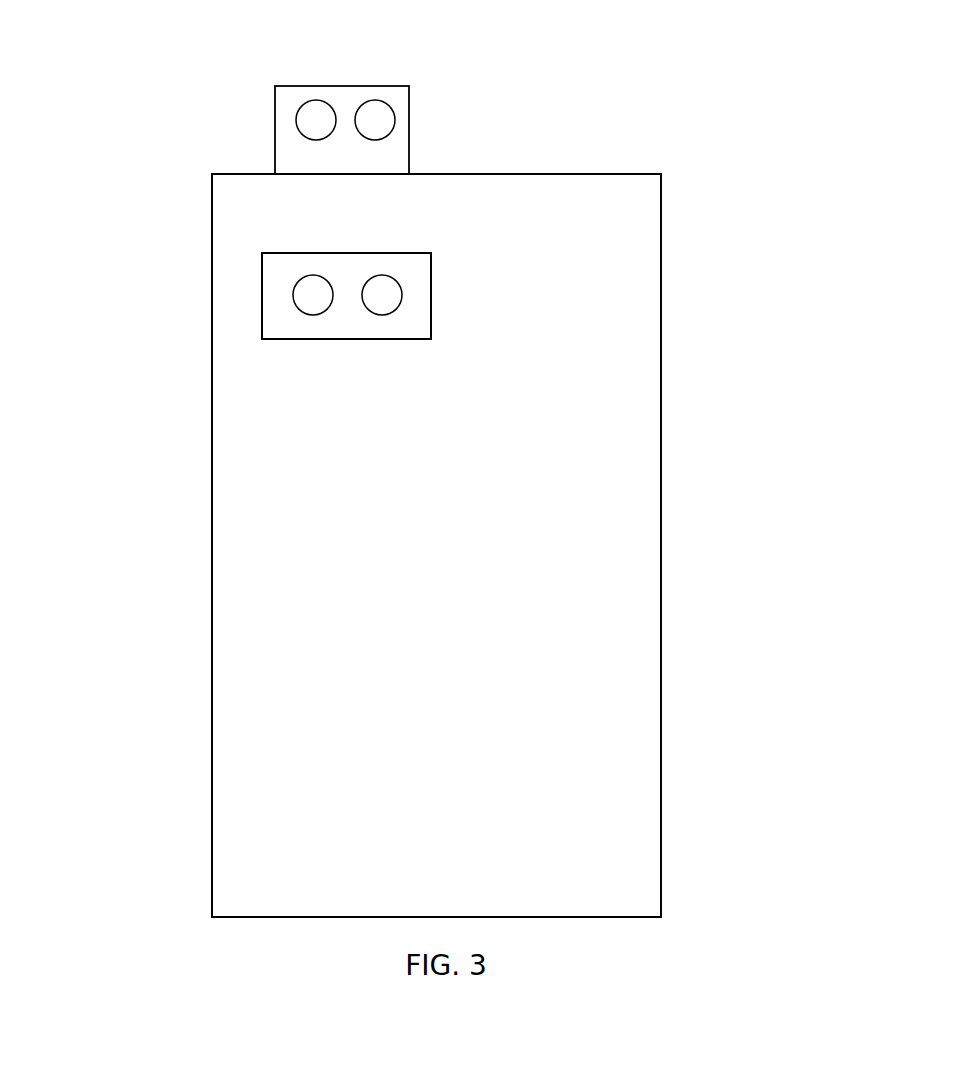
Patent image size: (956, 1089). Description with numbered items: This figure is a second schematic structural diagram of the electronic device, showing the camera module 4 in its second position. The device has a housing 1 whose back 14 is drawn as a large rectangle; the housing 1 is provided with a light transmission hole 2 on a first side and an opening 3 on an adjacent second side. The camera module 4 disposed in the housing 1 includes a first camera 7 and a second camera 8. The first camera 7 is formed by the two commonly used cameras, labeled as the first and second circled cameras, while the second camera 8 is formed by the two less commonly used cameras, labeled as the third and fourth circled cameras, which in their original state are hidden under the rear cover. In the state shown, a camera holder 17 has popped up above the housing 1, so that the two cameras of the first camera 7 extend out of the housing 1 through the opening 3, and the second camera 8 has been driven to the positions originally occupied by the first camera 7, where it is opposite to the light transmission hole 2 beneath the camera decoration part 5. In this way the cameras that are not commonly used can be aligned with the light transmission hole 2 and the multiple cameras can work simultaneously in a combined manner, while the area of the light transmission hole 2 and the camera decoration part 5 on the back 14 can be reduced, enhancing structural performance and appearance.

The housing 1 is at (661, 389).
The light transmission hole 2 is at (431, 287).
The opening 3 is at (409, 173).
The camera module 4 is at (215, 236).
The camera decoration part 5 is at (403, 321).
The first camera 7 is at (363, 137).
The second camera 8 is at (368, 310).
The back of the electronic device 14 is at (591, 578).
The camera holder 17 is at (409, 119).